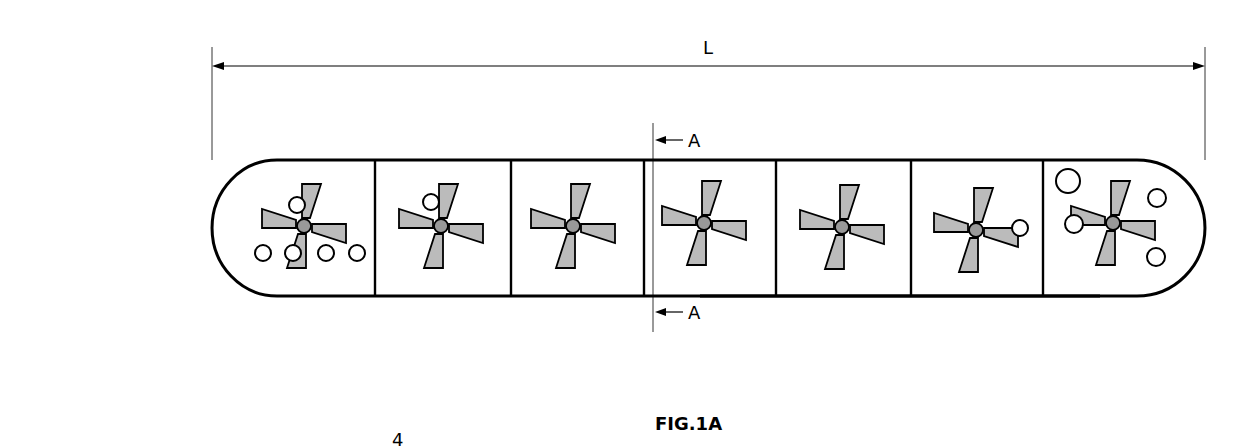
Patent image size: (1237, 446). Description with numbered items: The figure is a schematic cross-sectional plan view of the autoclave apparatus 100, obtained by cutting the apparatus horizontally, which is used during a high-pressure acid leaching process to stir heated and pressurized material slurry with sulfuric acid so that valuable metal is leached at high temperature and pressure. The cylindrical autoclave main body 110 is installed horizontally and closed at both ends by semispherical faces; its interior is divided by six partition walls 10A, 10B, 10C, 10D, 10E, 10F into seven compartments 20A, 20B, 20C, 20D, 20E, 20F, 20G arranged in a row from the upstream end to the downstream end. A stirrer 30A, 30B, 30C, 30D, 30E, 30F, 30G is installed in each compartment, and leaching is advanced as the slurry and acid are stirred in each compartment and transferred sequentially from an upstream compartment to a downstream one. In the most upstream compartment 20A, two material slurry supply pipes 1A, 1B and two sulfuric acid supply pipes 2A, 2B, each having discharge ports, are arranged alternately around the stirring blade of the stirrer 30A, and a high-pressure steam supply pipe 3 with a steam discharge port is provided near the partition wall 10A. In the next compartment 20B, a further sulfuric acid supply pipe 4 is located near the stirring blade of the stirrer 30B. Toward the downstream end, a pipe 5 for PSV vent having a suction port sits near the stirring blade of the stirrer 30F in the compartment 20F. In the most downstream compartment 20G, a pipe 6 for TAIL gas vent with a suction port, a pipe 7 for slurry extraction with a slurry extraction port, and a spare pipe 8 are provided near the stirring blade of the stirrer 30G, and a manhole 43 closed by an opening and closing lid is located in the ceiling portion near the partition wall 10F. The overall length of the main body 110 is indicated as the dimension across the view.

The autoclave apparatus 100 is at (680, 273).
The autoclave main body 110 is at (900, 347).
The partition wall 10A is at (399, 259).
The partition wall 10B is at (484, 195).
The partition wall 10C is at (617, 197).
The partition wall 10D is at (754, 201).
The partition wall 10E is at (883, 199).
The partition wall 10F is at (1019, 257).
The compartment 20A is at (300, 202).
The compartment 20B is at (455, 269).
The compartment 20C is at (578, 265).
The compartment 20D is at (718, 262).
The compartment 20E is at (844, 265).
The compartment 20F is at (977, 202).
The compartment 20G is at (1121, 198).
The stirrer 30A is at (285, 183).
The stirrer 30B is at (441, 267).
The stirrer 30C is at (565, 188).
The stirrer 30D is at (704, 270).
The stirrer 30E is at (840, 188).
The stirrer 30F is at (976, 274).
The stirrer 30G is at (1113, 266).
The material slurry supply pipe 1A is at (287, 153).
The material slurry supply pipe 1B is at (288, 302).
The sulfuric acid supply pipe 2A is at (228, 282).
The sulfuric acid supply pipe 2B is at (322, 302).
The high-pressure steam supply pipe 3 is at (358, 302).
The sulfuric acid supply pipe 4 is at (419, 165).
The pipe for PSV vent 5 is at (1007, 169).
The manhole 43 is at (1060, 145).
The pipe for TAIL gas vent 6 is at (1071, 282).
The pipe for slurry extraction 7 is at (1164, 160).
The spare pipe 8 is at (1161, 294).